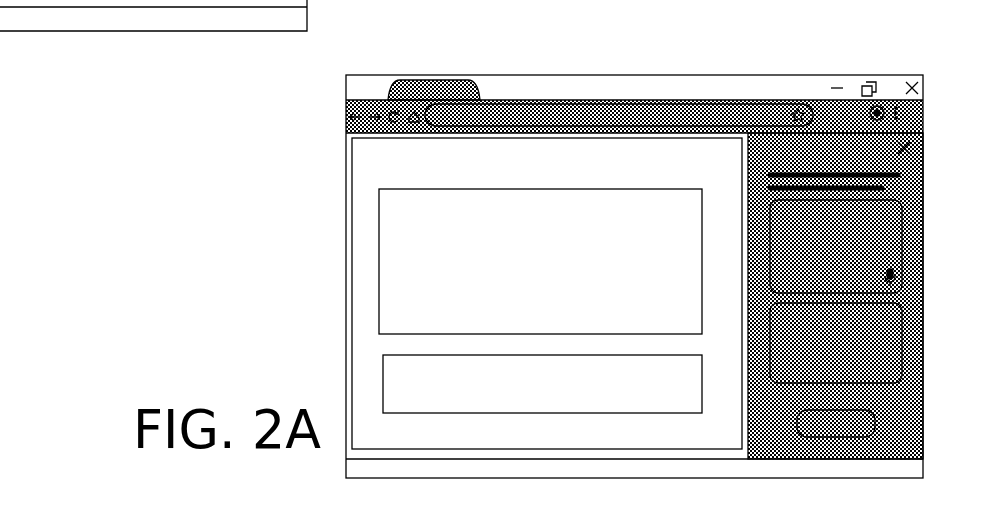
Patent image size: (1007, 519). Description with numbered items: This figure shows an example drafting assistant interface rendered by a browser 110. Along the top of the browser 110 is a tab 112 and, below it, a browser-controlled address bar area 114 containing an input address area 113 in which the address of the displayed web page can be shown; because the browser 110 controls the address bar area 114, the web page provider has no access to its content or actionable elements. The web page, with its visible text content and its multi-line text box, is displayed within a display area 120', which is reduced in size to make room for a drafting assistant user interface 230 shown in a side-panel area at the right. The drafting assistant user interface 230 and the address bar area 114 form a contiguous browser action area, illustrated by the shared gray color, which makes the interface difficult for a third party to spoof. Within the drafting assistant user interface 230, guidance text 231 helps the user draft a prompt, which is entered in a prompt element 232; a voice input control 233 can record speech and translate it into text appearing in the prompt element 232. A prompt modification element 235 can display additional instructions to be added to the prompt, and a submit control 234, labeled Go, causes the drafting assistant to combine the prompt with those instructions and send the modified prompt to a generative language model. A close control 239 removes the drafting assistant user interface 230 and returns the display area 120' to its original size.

The browser 110 is at (704, 74).
The tab 112 is at (436, 80).
The input address area 113 is at (492, 112).
The address bar area 114 is at (820, 108).
The display area 120' is at (547, 225).
The drafting assistant user interface 230 is at (940, 225).
The guidance text 231 is at (903, 183).
The prompt element 232 is at (836, 246).
The voice input control 233 is at (909, 277).
The submit control 234 is at (887, 424).
The prompt modification element 235 is at (836, 343).
The close control 239 is at (918, 147).